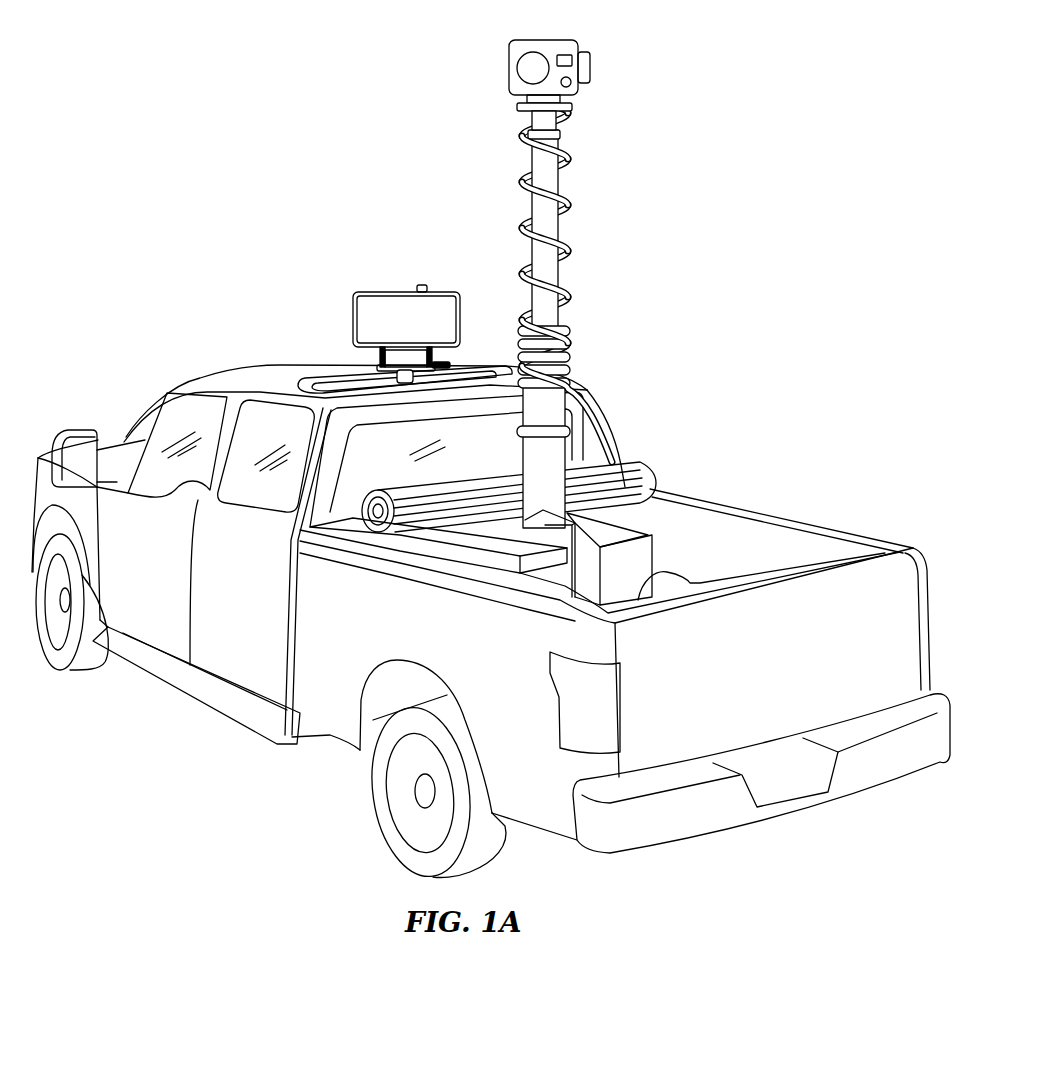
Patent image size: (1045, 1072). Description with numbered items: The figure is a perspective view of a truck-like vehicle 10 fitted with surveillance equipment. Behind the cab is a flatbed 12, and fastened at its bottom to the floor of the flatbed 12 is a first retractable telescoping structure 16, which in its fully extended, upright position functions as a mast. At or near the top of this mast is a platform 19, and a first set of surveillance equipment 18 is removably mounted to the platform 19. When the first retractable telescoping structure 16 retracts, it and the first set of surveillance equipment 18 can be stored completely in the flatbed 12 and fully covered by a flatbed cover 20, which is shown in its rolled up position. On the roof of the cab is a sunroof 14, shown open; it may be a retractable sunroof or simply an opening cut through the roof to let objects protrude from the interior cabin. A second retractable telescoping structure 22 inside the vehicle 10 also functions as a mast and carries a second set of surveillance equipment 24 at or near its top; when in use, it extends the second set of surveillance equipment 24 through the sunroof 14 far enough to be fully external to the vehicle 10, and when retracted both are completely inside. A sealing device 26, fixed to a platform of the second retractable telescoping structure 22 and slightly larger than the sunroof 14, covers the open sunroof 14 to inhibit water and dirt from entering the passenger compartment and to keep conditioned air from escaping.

The vehicle 10 is at (228, 368).
The flatbed 12 is at (760, 560).
The sunroof 14 is at (347, 378).
The first retractable telescoping structure 16 is at (560, 232).
The first set of surveillance equipment 18 is at (552, 40).
The platform 19 is at (572, 107).
The flatbed cover 20 is at (627, 464).
The second retractable telescoping structure 22 is at (462, 368).
The second set of surveillance equipment 24 is at (391, 292).
The sealing device 26 is at (343, 384).